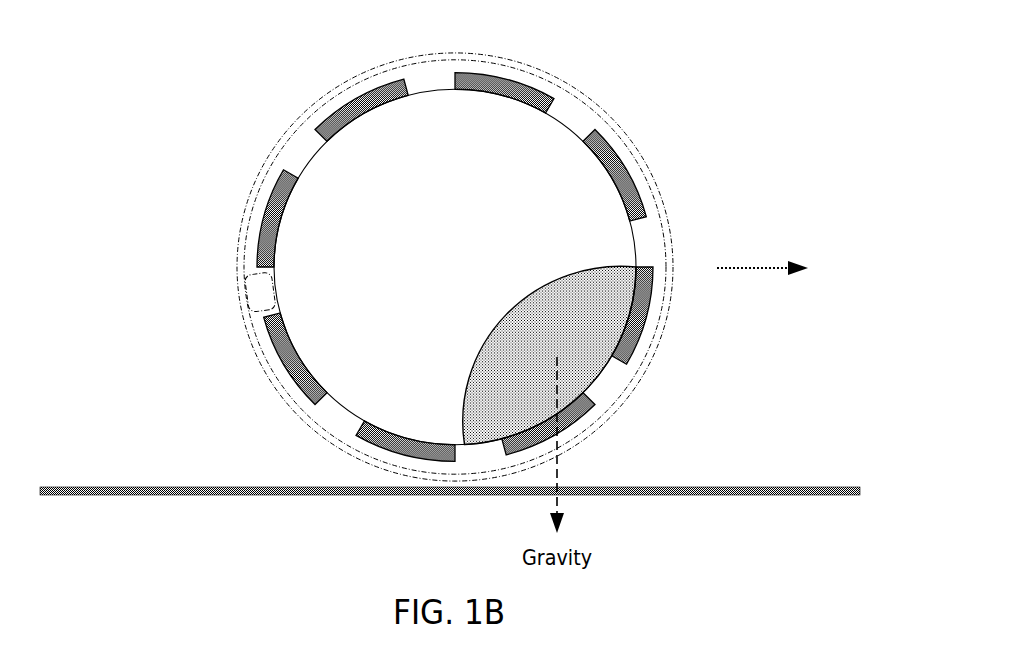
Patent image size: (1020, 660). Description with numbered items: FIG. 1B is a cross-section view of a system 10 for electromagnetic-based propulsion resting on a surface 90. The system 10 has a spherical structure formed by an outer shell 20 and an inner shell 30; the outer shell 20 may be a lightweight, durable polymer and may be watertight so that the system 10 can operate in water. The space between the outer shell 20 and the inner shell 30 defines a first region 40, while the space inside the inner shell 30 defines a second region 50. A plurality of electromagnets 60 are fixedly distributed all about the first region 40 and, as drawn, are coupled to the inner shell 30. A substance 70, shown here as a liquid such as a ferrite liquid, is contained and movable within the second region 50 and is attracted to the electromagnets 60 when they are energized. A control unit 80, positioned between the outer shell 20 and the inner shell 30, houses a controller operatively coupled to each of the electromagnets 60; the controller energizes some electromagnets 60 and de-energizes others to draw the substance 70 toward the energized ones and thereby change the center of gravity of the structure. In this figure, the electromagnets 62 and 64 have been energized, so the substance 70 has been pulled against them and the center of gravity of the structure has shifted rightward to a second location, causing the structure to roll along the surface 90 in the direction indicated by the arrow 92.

The system 10 is at (118, 107).
The outer shell 20 is at (327, 95).
The inner shell 30 is at (308, 163).
The first region 40 is at (413, 72).
The second region 50 is at (552, 148).
The electromagnets 60 is at (275, 213).
The electromagnet 62 is at (648, 293).
The electromagnet 64 is at (575, 424).
The substance 70 is at (582, 375).
The control unit 80 is at (258, 297).
The surface 90 is at (133, 487).
The arrow 92 is at (750, 268).